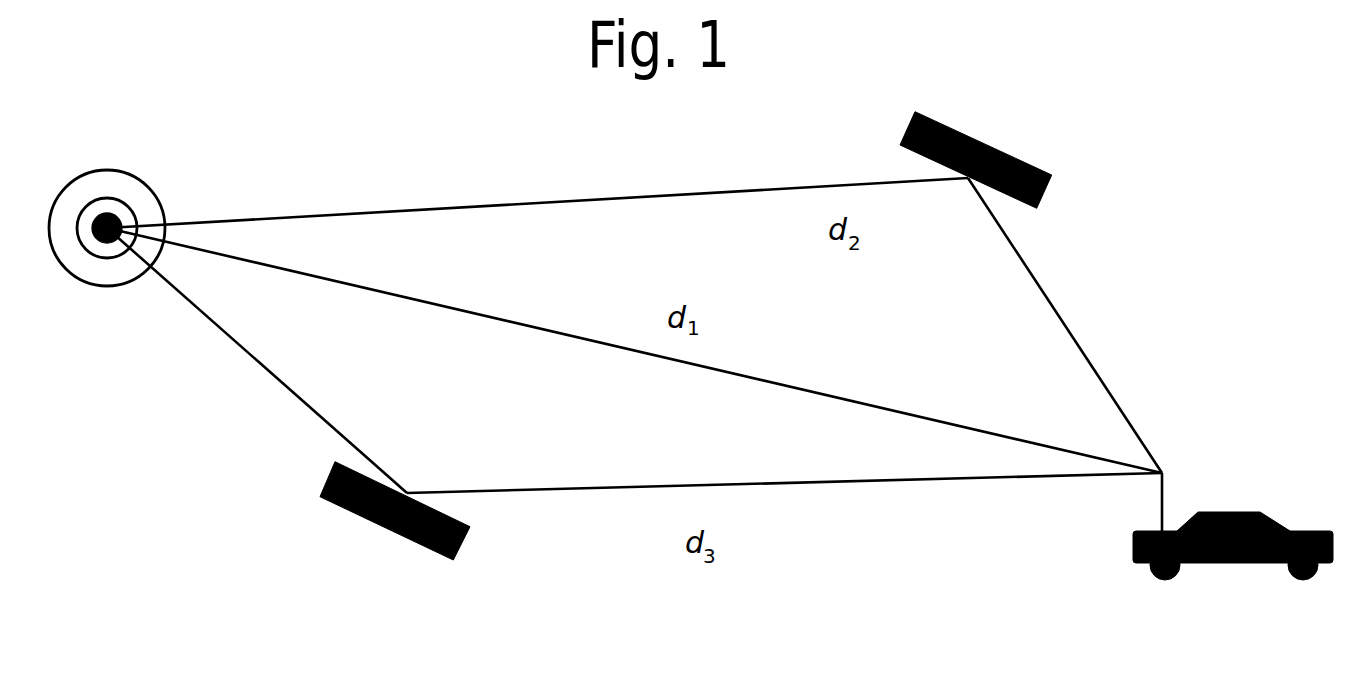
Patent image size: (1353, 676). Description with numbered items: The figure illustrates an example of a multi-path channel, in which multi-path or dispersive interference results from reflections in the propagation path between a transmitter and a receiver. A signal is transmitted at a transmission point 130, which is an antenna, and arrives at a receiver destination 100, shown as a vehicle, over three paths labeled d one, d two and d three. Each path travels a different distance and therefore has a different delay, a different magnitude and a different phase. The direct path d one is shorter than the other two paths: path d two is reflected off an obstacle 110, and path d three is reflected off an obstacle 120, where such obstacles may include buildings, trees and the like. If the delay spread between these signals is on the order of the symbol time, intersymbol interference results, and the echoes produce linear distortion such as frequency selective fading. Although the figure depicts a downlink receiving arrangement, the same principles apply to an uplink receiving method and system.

The receiver destination 100 is at (1247, 512).
The obstacle 110 is at (1052, 185).
The obstacle 120 is at (467, 540).
The transmission point 130 is at (126, 205).